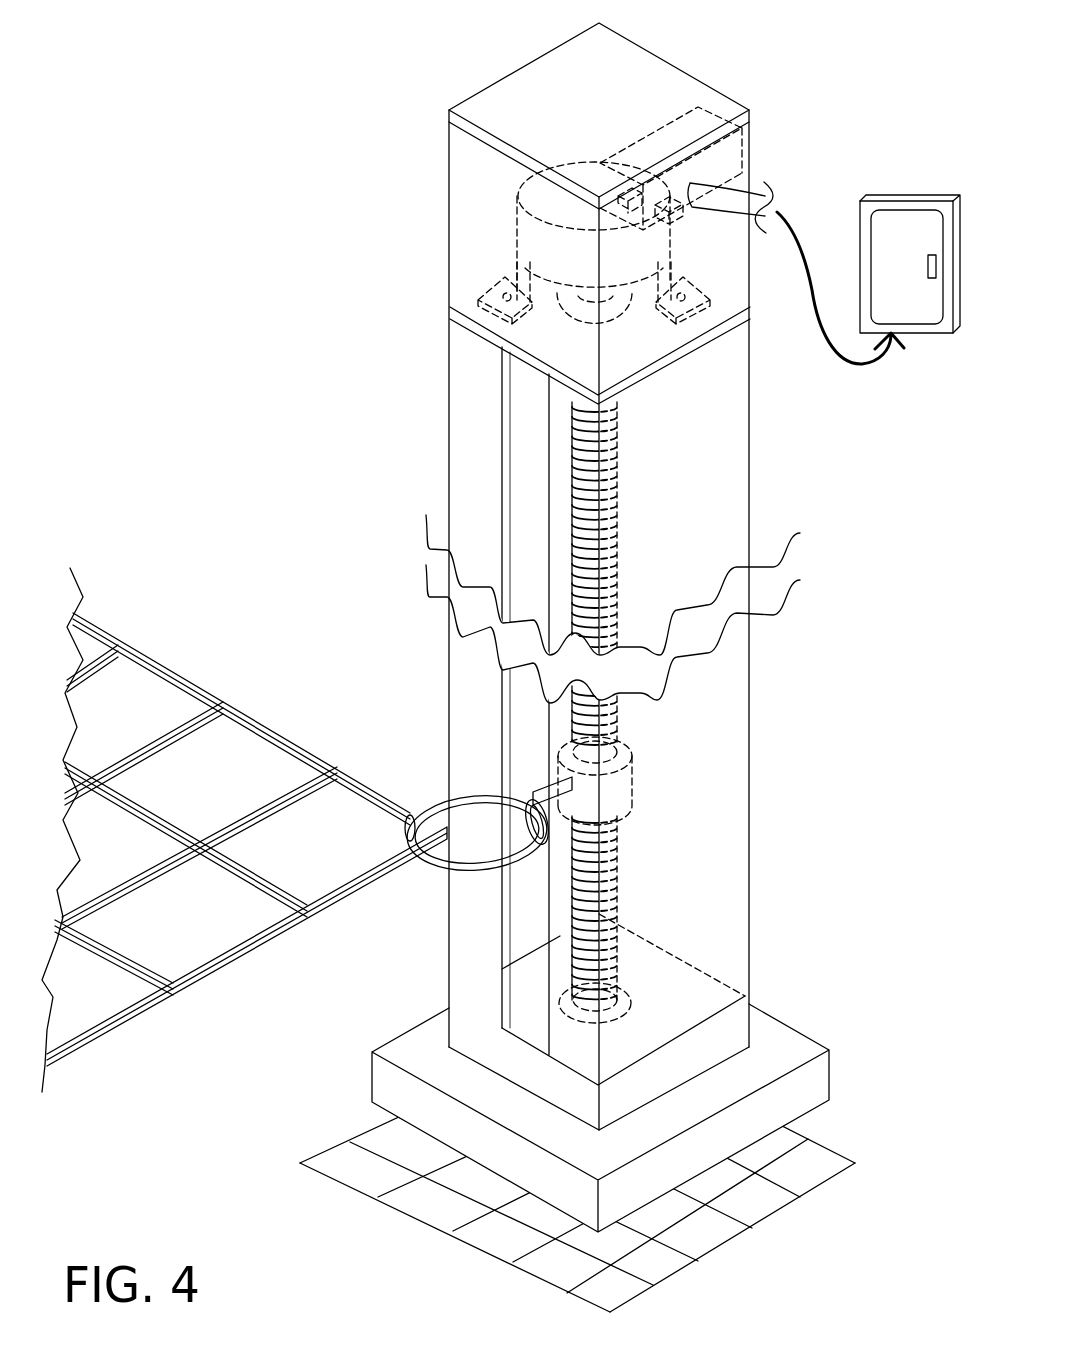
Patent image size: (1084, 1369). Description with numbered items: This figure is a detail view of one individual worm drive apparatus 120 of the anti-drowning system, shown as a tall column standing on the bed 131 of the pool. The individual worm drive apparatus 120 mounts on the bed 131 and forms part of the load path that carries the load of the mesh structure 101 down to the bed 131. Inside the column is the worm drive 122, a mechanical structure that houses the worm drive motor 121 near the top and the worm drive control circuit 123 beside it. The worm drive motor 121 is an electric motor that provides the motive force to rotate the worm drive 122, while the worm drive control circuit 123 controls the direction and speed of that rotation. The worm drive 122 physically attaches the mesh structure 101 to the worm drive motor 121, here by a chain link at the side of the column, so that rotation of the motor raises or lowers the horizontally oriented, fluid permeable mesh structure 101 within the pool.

The mesh structure 101 is at (165, 995).
The individual worm drive apparatus 120 is at (405, 131).
The worm drive motor 121 is at (533, 243).
The worm drive 122 is at (608, 513).
The worm drive control circuit 123 is at (722, 157).
The bed 131 is at (427, 1205).